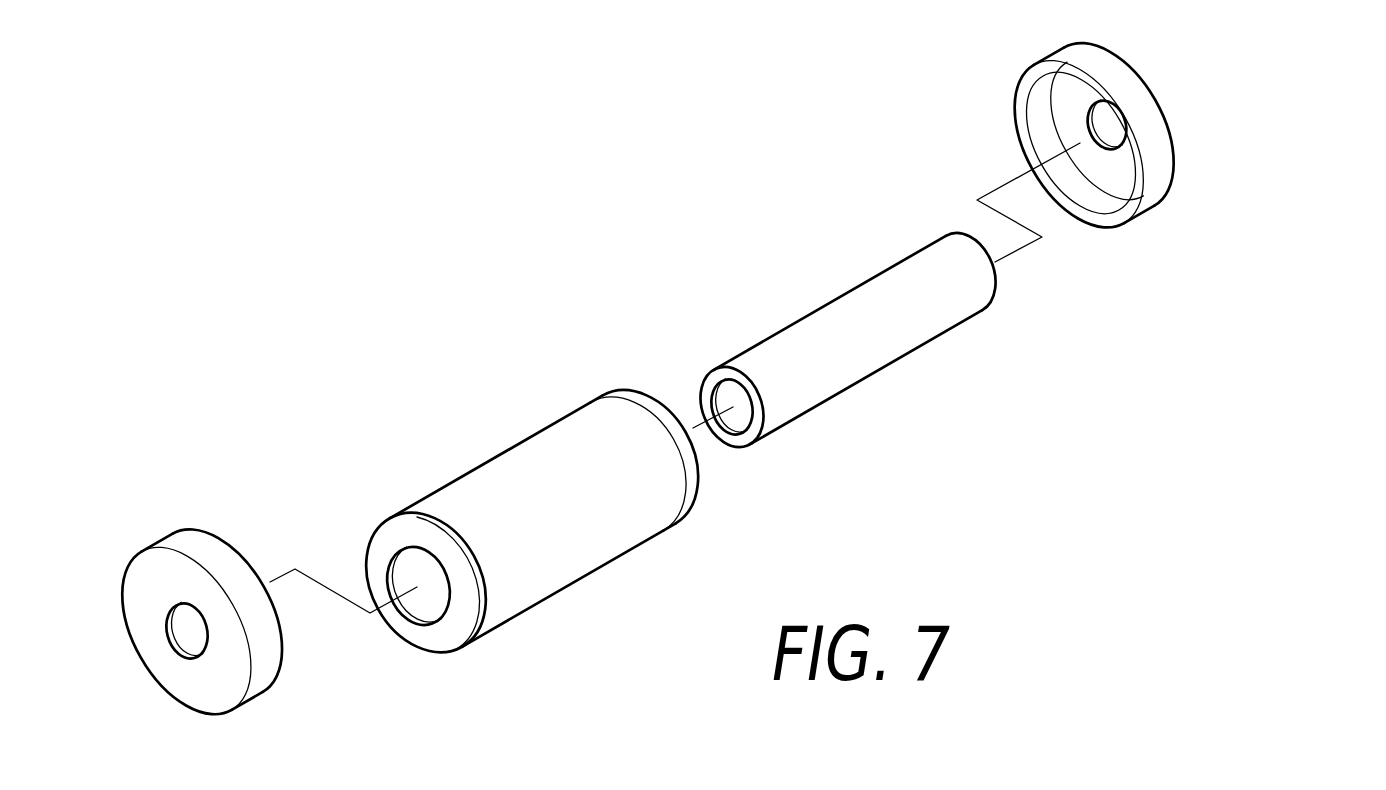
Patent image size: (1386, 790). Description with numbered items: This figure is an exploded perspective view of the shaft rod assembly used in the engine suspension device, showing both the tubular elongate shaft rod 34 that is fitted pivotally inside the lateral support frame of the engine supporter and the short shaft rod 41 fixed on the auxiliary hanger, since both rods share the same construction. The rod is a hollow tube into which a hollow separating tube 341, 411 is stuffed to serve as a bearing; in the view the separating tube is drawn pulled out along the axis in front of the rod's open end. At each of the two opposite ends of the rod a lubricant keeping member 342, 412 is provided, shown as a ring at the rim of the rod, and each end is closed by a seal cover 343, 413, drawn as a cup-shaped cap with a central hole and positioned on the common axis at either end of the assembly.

The elongate shaft rod 34 is at (580, 573).
The short shaft rod 41 is at (577, 540).
The hollow separating tube 341 is at (842, 328).
The hollow separating tube 411 is at (827, 345).
The lubricant keeping member 342 is at (580, 573).
The lubricant keeping member 412 is at (455, 633).
The seal cover 343 is at (716, 378).
The seal cover 413 is at (167, 577).